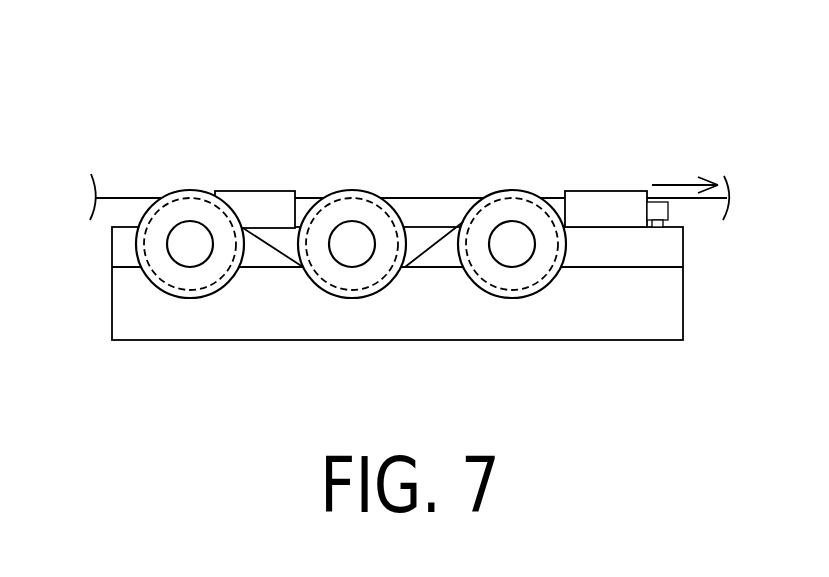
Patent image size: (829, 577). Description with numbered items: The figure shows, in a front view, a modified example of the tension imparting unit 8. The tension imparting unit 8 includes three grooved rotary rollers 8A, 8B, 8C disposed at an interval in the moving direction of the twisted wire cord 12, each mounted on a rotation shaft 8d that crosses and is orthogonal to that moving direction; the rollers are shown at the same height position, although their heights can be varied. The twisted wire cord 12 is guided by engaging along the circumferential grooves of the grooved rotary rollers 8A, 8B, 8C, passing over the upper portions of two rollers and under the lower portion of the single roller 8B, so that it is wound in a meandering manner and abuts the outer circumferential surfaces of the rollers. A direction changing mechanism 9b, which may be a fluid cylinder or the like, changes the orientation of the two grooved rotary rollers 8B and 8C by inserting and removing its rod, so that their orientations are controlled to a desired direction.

The tension imparting unit 8 is at (496, 147).
The grooved rotary roller 8A is at (188, 280).
The grooved rotary roller 8B is at (345, 280).
The grooved rotary roller 8C is at (512, 275).
The rotation shaft 8d is at (202, 250).
The direction changing mechanism 9b is at (257, 203).
The twisted wire cord 12 is at (133, 198).